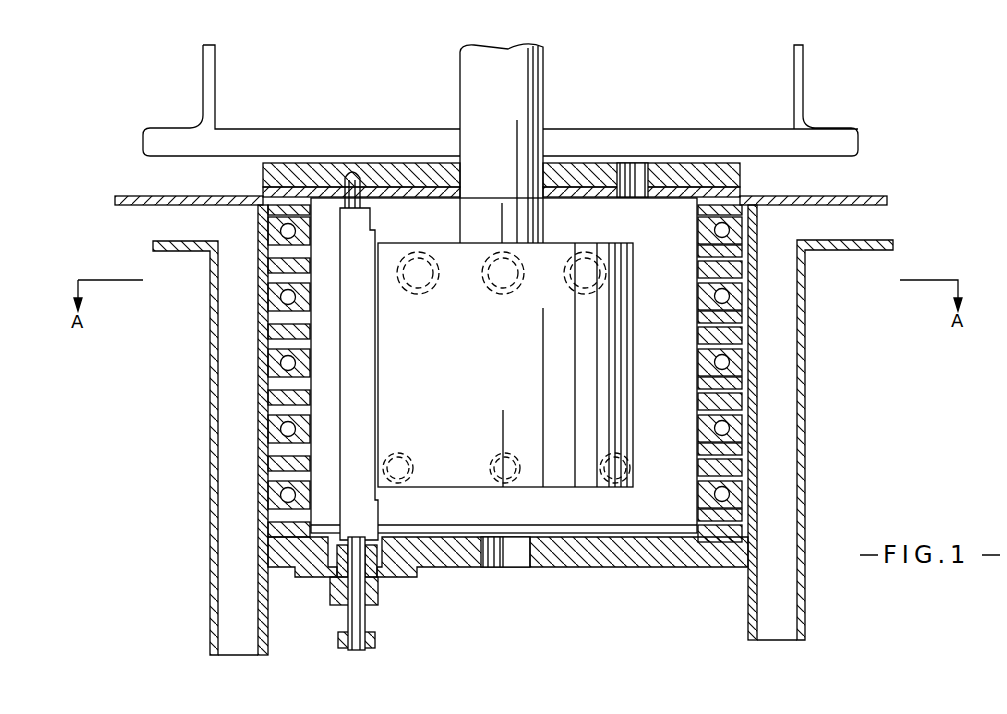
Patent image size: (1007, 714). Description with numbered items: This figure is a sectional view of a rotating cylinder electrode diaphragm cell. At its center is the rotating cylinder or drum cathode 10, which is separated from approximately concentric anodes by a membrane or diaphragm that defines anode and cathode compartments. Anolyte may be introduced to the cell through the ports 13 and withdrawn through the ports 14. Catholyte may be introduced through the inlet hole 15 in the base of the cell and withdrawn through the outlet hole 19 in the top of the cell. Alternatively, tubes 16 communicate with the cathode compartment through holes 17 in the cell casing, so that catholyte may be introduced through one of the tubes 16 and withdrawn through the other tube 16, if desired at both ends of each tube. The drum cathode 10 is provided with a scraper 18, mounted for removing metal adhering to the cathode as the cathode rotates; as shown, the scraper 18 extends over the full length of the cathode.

The rotating cylinder or drum cathode 10 is at (504, 358).
The ports 13 is at (609, 484).
The ports 14 is at (428, 254).
The inlet hole 15 is at (530, 560).
The tubes 16 is at (190, 196).
The holes 17 is at (263, 212).
The scraper 18 is at (360, 394).
The outlet hole 19 is at (638, 170).